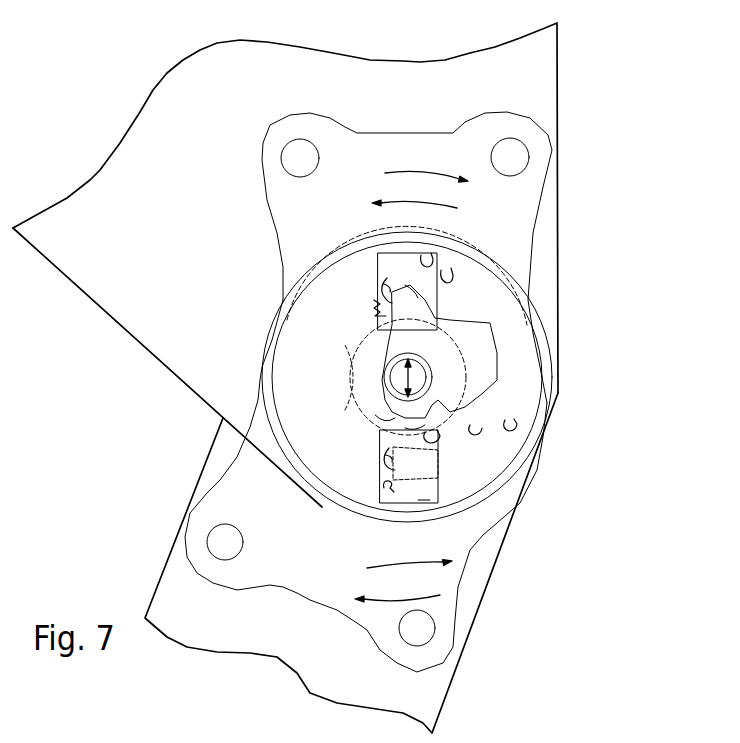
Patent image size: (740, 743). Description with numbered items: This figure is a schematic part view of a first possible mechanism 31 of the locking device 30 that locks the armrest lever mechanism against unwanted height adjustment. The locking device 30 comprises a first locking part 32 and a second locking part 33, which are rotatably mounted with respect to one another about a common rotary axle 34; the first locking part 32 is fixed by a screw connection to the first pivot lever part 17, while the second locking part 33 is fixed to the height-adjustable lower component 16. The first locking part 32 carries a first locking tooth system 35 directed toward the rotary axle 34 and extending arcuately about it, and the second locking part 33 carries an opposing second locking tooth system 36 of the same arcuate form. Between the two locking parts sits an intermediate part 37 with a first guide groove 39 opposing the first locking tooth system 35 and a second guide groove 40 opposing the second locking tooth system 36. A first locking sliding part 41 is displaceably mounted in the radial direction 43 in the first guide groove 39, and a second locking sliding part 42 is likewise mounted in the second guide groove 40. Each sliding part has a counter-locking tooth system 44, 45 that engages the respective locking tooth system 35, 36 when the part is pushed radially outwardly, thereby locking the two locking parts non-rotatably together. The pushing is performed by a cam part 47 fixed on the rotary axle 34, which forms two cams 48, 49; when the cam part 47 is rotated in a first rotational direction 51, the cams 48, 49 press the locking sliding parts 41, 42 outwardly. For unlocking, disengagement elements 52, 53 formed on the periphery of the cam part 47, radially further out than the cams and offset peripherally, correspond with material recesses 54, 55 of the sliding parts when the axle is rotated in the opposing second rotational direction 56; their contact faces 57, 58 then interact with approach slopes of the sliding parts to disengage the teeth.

The lower component 16 is at (107, 193).
The first pivot lever part 17 is at (208, 623).
The locking device 30 is at (596, 147).
The first possible mechanism 31 is at (154, 342).
The first locking part 32 is at (317, 583).
The second locking part 33 is at (397, 148).
The rotary axle 34 is at (395, 390).
The first locking tooth system 35 is at (503, 423).
The second locking tooth system 36 is at (441, 280).
The intermediate part 37 is at (440, 338).
The first guide groove 39 is at (390, 484).
The second guide groove 40 is at (385, 287).
The first locking sliding part 41 is at (393, 453).
The second locking sliding part 42 is at (430, 307).
The radial direction 43 is at (395, 390).
The counter-locking tooth system 44 is at (423, 500).
The counter-locking tooth system 45 is at (423, 258).
The cam part 47 is at (376, 423).
The cam 48 is at (410, 430).
The cam 49 is at (417, 333).
The first rotational direction 51 is at (432, 203).
The disengagement element 52 is at (470, 427).
The disengagement element 53 is at (355, 335).
The material recess 54 is at (422, 458).
The material recess 55 is at (413, 292).
The second rotational direction 56 is at (427, 173).
The contact face 57 is at (430, 443).
The contact face 58 is at (377, 308).